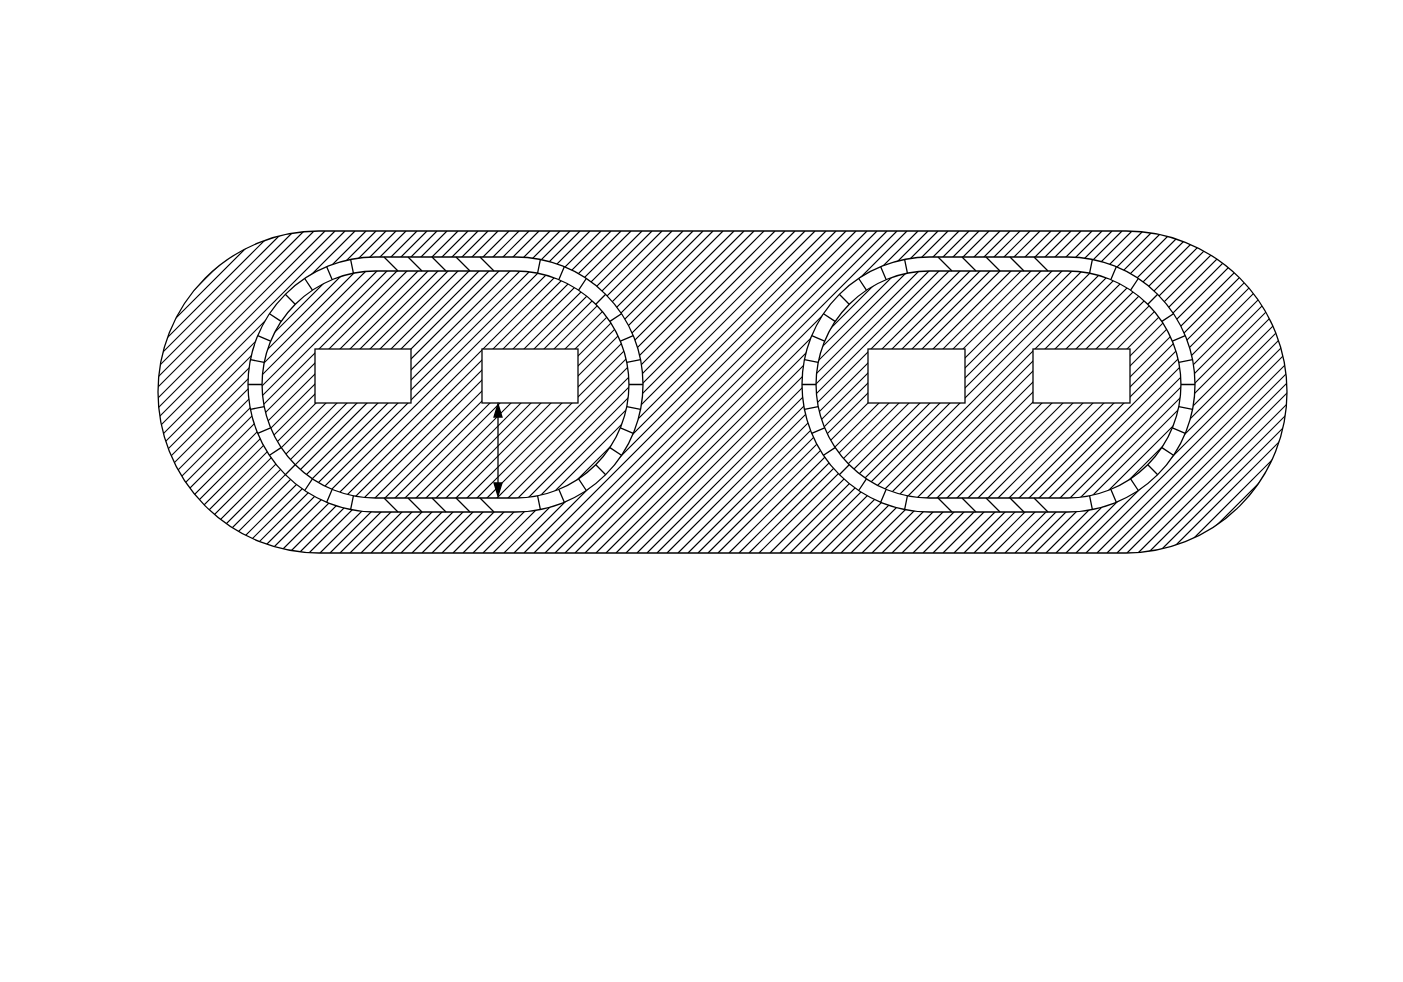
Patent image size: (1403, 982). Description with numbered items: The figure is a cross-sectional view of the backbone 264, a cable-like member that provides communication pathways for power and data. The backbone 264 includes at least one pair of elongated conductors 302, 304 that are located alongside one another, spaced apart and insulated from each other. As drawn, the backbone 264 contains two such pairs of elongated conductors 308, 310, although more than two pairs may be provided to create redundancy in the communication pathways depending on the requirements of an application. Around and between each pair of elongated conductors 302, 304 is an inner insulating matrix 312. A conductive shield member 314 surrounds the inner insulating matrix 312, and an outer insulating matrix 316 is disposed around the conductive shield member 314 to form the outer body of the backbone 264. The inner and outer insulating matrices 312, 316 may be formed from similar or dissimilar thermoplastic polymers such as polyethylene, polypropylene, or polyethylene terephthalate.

The backbone 264 is at (1184, 103).
The elongated conductor 302 is at (378, 392).
The elongated conductor 304 is at (545, 392).
The pair of elongated conductors 308 is at (360, 590).
The pair of elongated conductors 310 is at (1028, 581).
The inner insulating matrix 312 is at (287, 392).
The conductive shield member 314 is at (375, 258).
The outer insulating matrix 316 is at (718, 541).